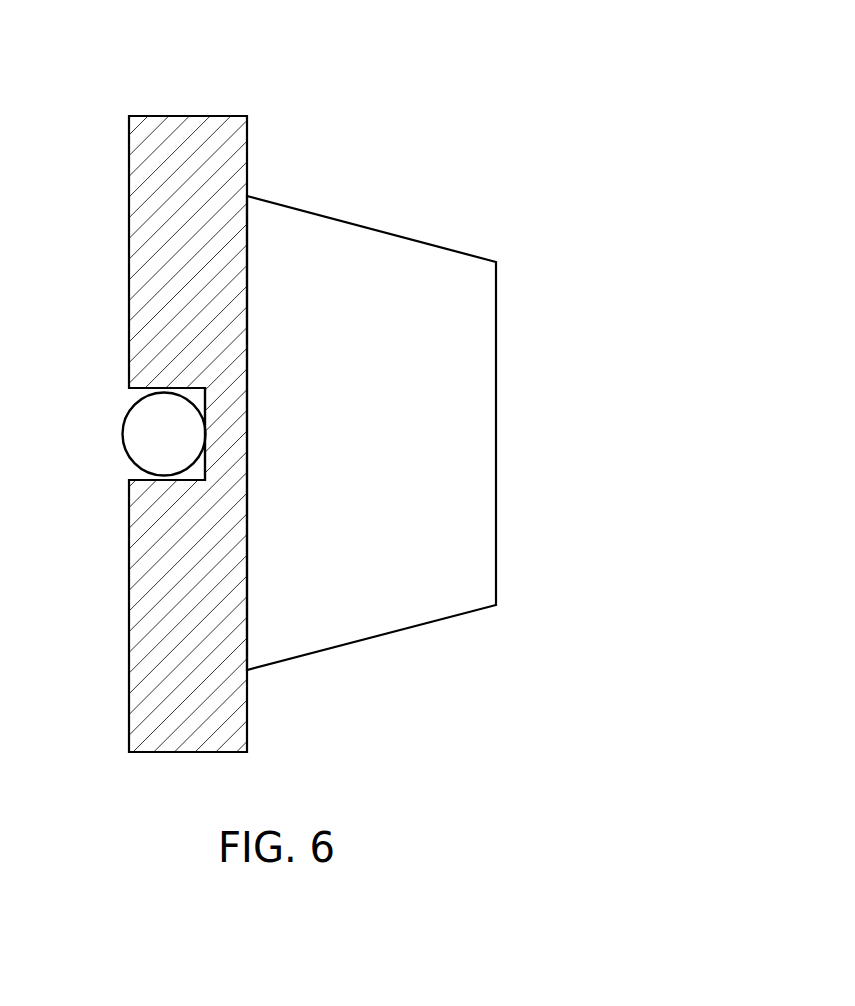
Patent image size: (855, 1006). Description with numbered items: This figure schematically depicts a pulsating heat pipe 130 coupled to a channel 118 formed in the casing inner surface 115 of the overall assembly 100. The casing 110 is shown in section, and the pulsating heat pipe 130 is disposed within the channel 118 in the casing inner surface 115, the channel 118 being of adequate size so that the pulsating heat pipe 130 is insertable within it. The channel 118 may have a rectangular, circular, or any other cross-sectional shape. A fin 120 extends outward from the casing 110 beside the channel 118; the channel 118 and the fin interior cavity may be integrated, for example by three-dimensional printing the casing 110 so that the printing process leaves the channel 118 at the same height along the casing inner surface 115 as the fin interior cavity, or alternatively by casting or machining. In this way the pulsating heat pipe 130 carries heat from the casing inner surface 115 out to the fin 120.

The optical assembly 100 is at (493, 53).
The casing 110 is at (427, 395).
The casing inner surface 115 is at (427, 435).
The channel 118 is at (129, 472).
The fin 120 is at (430, 433).
The pulsating heat pipe 130 is at (107, 420).